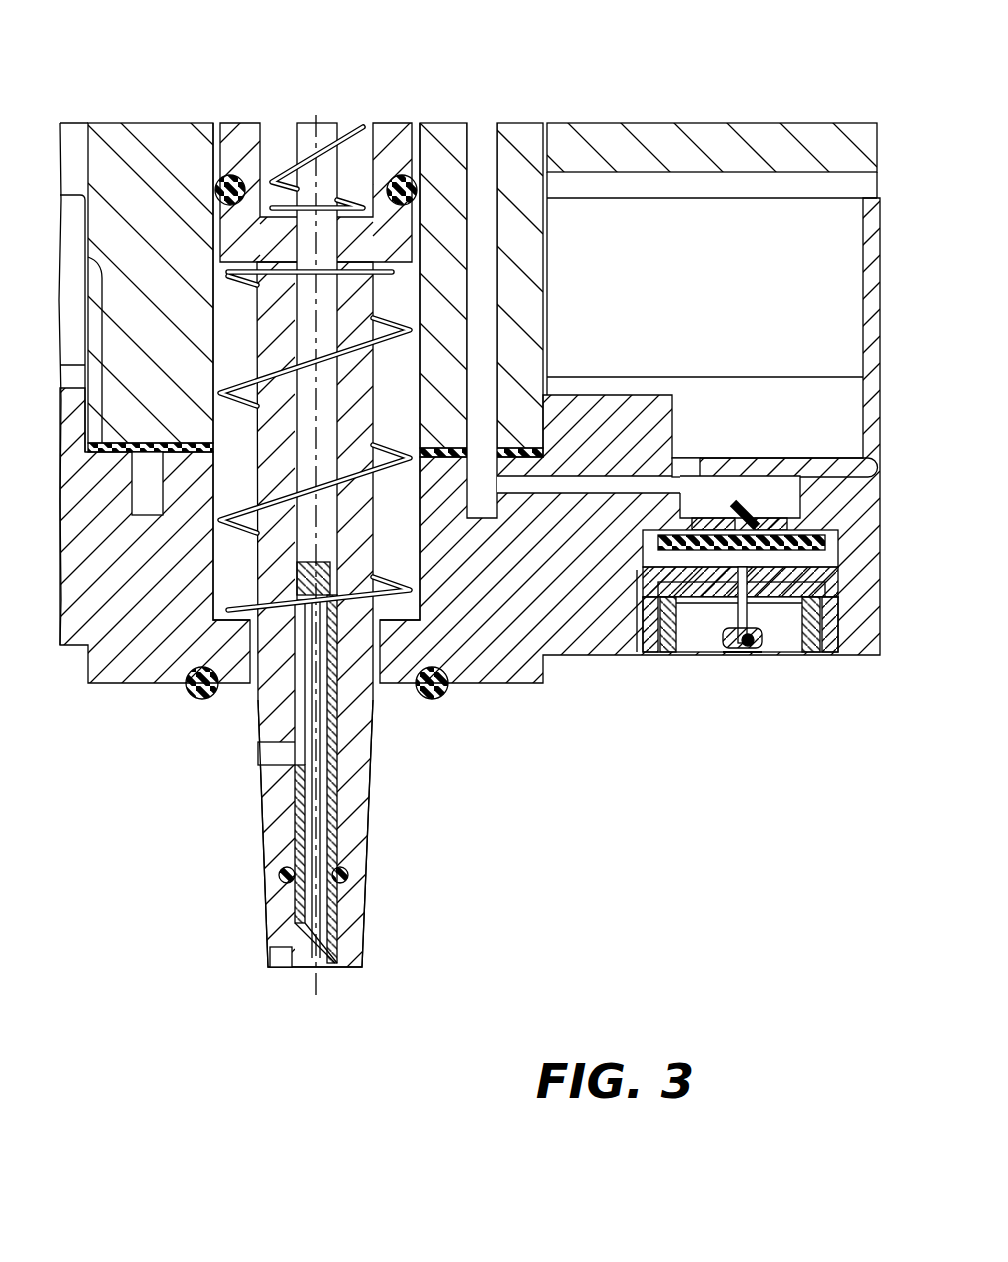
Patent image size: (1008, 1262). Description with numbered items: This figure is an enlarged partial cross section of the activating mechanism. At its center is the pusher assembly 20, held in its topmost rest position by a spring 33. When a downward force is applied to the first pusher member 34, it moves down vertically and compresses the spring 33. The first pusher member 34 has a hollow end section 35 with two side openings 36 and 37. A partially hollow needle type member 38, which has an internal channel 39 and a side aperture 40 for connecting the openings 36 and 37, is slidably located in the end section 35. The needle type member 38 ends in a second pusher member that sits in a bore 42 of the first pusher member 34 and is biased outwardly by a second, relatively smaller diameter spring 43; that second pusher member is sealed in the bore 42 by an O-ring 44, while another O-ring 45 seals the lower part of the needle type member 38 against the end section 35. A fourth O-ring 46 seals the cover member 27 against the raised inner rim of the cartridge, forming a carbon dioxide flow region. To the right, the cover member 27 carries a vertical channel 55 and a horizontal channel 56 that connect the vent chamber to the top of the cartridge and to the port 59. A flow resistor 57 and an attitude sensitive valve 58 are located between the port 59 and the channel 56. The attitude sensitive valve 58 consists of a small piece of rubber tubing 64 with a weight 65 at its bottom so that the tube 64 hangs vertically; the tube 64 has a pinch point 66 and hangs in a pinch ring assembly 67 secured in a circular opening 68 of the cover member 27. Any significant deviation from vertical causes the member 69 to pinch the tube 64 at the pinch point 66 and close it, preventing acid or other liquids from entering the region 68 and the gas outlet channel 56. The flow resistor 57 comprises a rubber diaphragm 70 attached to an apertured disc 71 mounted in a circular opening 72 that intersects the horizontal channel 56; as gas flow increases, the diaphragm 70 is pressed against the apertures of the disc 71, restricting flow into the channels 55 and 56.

The pusher assembly 20 is at (332, 100).
The cover member 27 is at (508, 665).
The spring 33 is at (115, 681).
The first pusher member 34 is at (393, 132).
The hollow end section 35 is at (350, 905).
The side opening 36 is at (272, 957).
The side opening 37 is at (262, 767).
The needle type member 38 is at (338, 732).
The internal channel 39 is at (317, 815).
The side aperture 40 is at (298, 693).
The bore 42 is at (407, 300).
The second spring 43 is at (282, 160).
The O-ring 44 is at (420, 176).
The O-ring 45 is at (282, 880).
The fourth O-ring 46 is at (193, 697).
The vertical channel 55 is at (485, 315).
The horizontal channel 56 is at (578, 483).
The flow resistor 57 is at (755, 496).
The attitude sensitive valve 58 is at (690, 630).
The port 59 is at (773, 655).
The rubber tubing 64 is at (740, 657).
The weight 65 is at (735, 642).
The pinch point 66 is at (720, 628).
The pinch ring assembly 67 is at (860, 587).
The circular opening 68 is at (833, 550).
The member 69 is at (780, 610).
The rubber diaphragm 70 is at (797, 541).
The apertured disc 71 is at (708, 518).
The circular opening 72 is at (688, 497).